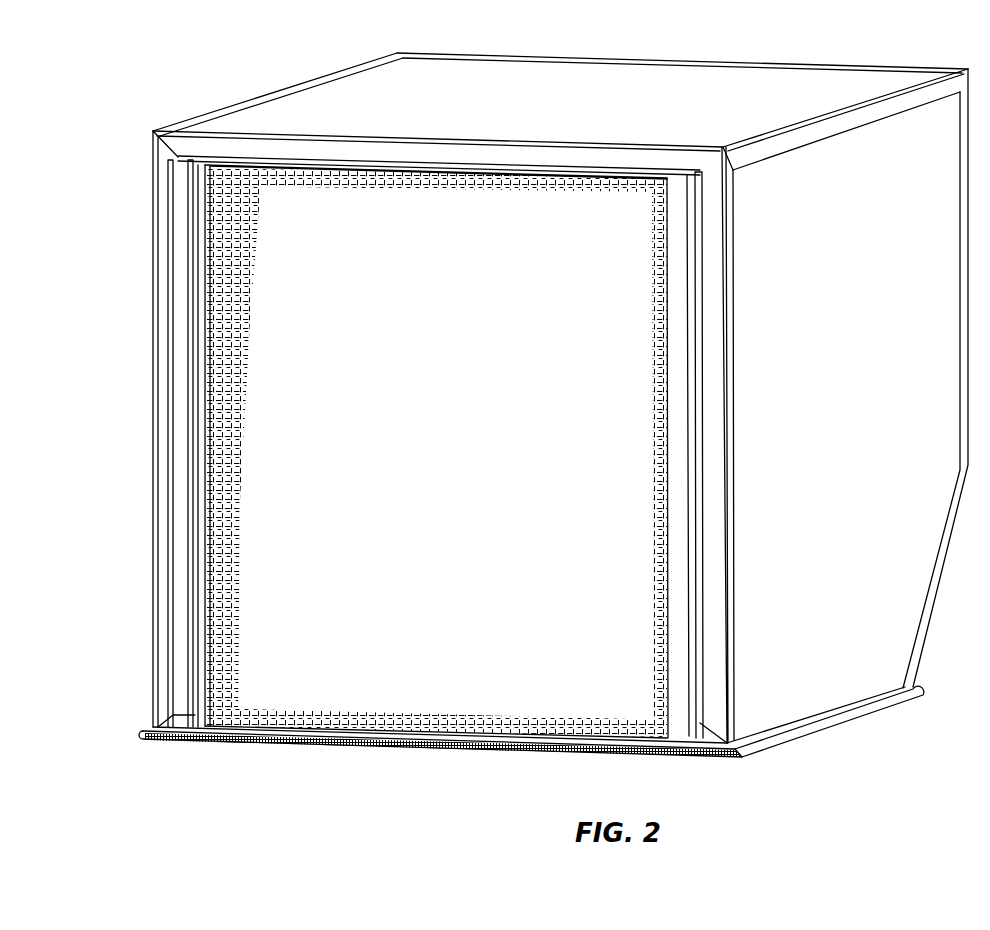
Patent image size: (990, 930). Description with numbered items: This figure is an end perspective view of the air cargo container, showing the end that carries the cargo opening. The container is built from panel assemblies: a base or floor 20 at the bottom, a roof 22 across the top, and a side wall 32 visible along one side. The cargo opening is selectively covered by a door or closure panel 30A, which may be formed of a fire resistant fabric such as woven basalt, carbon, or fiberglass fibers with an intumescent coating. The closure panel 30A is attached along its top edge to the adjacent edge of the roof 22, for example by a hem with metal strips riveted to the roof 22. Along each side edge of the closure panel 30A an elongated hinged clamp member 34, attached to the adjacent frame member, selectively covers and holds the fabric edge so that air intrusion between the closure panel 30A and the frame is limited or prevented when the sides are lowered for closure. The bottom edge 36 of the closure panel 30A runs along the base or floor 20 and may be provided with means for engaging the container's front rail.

The base or floor 20 is at (840, 725).
The roof 22 is at (545, 110).
The door or closure panel 30A is at (449, 441).
The side wall 32 is at (840, 421).
The elongated hinged clamp member 34 is at (175, 360).
The bottom edge 36 is at (383, 747).